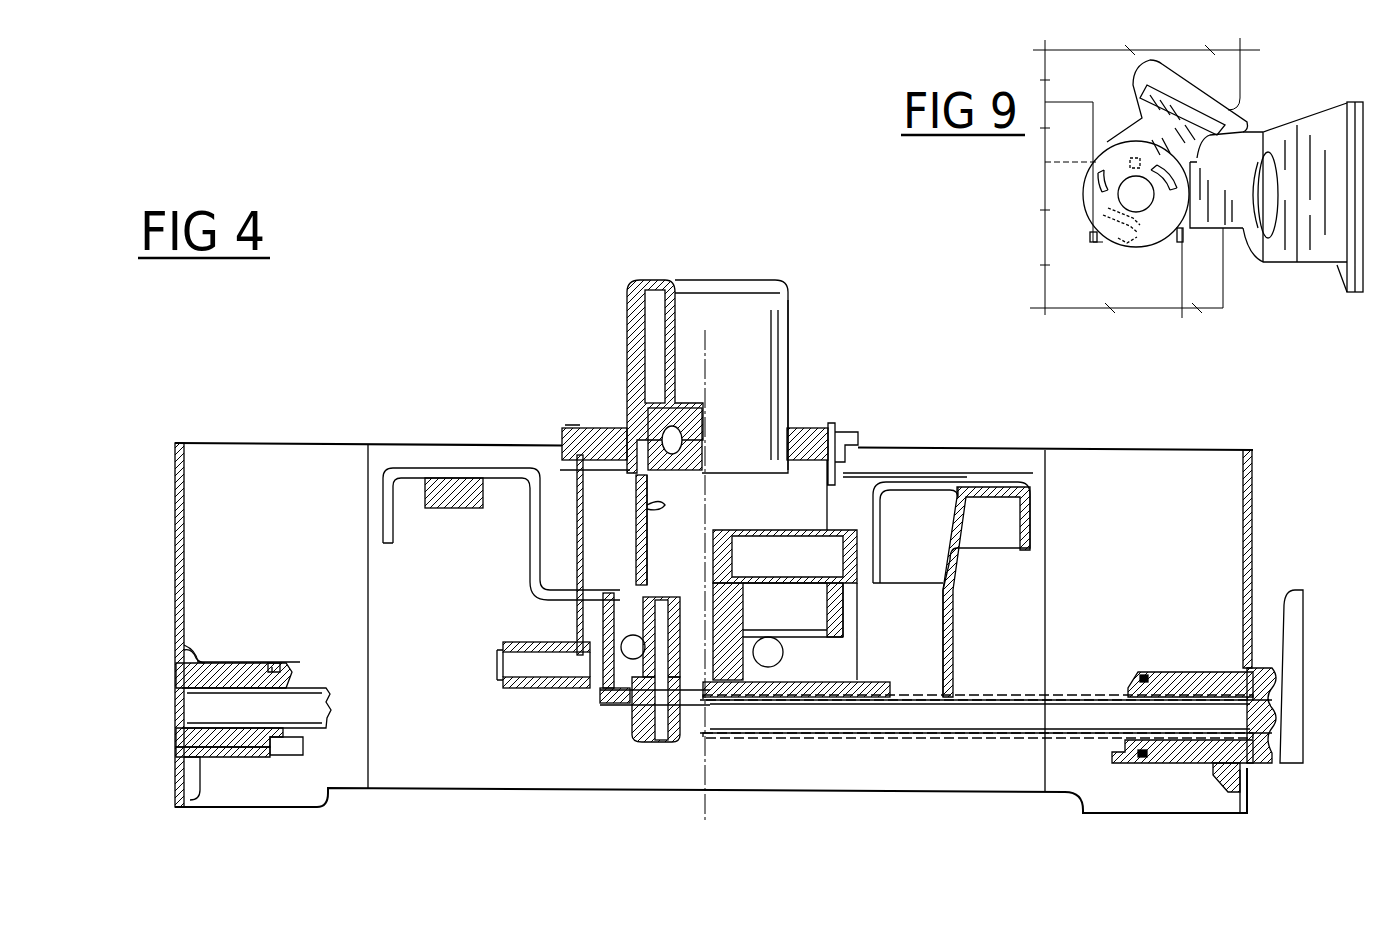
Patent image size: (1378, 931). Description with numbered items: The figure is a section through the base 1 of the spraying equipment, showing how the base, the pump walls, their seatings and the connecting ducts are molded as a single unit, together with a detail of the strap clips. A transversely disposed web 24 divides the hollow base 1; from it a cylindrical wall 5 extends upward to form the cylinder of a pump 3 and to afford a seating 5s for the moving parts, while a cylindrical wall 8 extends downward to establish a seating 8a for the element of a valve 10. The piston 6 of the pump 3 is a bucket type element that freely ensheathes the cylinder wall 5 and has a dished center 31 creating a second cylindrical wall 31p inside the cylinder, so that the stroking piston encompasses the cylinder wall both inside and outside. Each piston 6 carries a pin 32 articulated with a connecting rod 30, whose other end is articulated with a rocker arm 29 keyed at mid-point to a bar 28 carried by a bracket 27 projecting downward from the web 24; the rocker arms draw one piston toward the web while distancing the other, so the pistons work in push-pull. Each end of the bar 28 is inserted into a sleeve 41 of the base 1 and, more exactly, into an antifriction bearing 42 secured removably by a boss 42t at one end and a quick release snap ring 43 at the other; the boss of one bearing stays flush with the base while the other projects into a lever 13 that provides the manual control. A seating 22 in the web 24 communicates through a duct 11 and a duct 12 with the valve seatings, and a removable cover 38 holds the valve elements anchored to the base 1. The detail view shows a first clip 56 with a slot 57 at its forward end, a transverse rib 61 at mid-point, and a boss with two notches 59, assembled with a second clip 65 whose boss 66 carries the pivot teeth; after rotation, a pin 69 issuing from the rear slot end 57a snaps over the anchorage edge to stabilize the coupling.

In FIG. 4, the base 1 is at (180, 425).
In FIG. 4, the pump 3 is at (800, 350).
In FIG. 4, the cylindrical wall 5 is at (580, 522).
In FIG. 4, the seating 5s is at (655, 505).
In FIG. 4, the piston 6 is at (742, 272).
In FIG. 4, the cylindrical wall 8 is at (617, 635).
In FIG. 4, the seating 8a is at (618, 685).
In FIG. 4, the valve 10 is at (663, 755).
In FIG. 4, the duct 11 is at (768, 657).
In FIG. 4, the duct 12 is at (641, 660).
In FIG. 4, the lever 13 is at (1318, 548).
In FIG. 4, the seating 22 is at (822, 612).
In FIG. 4, the web 24 is at (527, 587).
In FIG. 4, the bracket 27 is at (947, 650).
In FIG. 4, the bar 28 is at (300, 713).
In FIG. 4, the rocker arm 29 is at (543, 690).
In FIG. 4, the connecting rod 30 is at (530, 540).
In FIG. 4, the dished center 31 is at (685, 402).
In FIG. 4, the second cylindrical wall 31p is at (660, 307).
In FIG. 4, the pin 32 is at (613, 443).
In FIG. 4, the cover 38 is at (690, 712).
In FIG. 4, the sleeve 41 is at (222, 752).
In FIG. 4, the antifriction bearing 42 is at (221, 663).
In FIG. 4, the boss 42t is at (176, 675).
In FIG. 4, the snap ring 43 is at (274, 665).
In FIG. 9, the first clip 56 is at (1203, 240).
In FIG. 9, the slot 57 is at (1268, 205).
In FIG. 9, the slot end 57a is at (1208, 122).
In FIG. 9, the notch 59 is at (1107, 217).
In FIG. 9, the transverse rib 61 is at (1173, 232).
In FIG. 9, the second clip 65 is at (1123, 117).
In FIG. 9, the boss 66 is at (1120, 235).
In FIG. 9, the pin 69 is at (1150, 88).